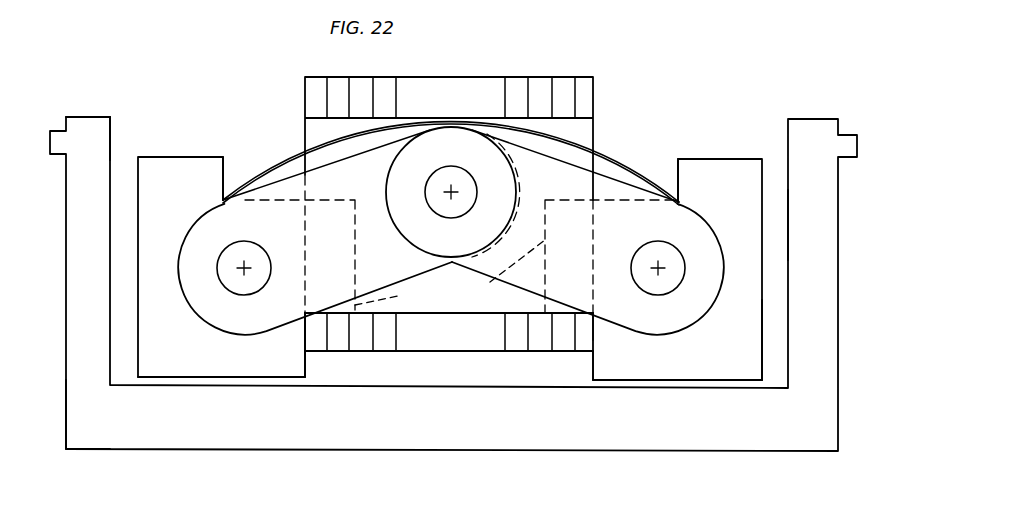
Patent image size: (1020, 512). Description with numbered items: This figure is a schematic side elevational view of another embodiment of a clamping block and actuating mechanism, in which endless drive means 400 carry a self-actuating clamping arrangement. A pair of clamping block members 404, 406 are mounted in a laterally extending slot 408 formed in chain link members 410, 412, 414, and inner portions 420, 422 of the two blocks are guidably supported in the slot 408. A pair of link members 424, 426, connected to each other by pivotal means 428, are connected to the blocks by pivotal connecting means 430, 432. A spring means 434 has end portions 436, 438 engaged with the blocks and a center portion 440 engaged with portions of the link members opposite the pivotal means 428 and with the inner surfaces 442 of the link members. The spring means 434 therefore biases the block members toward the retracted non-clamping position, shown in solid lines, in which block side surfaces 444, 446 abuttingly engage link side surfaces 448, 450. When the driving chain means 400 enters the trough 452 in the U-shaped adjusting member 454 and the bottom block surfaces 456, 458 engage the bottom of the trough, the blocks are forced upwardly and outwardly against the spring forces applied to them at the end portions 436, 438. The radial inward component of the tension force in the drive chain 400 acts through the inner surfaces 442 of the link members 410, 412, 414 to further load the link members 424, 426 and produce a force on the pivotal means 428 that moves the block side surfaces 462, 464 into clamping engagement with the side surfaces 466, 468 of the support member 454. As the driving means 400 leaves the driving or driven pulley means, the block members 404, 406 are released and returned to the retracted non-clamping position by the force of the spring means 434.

The endless drive means 400 is at (606, 80).
The clamping block member 404 is at (195, 368).
The clamping block member 406 is at (732, 372).
The laterally extending slot 408 is at (452, 298).
The chain link member 410 is at (312, 342).
The chain link member 412 is at (362, 342).
The chain link member 414 is at (585, 340).
The inner portion 420 is at (450, 274).
The inner portion 422 is at (505, 107).
The link member 424 is at (203, 290).
The link member 426 is at (692, 310).
The pivotal means 428 is at (447, 207).
The pivotal connecting means 430 is at (240, 285).
The pivotal connecting means 432 is at (650, 283).
The spring means 434 is at (273, 160).
The end portion 436 is at (222, 200).
The end portion 438 is at (677, 200).
The center portion 440 is at (446, 120).
The inner surfaces 442 is at (356, 120).
The block side surface 444 is at (304, 322).
The block side surface 446 is at (587, 327).
The link side surface 448 is at (304, 346).
The link side surface 450 is at (595, 364).
The trough 452 is at (655, 130).
The U-shaped adjusting member 454 is at (90, 126).
The bottom block surface 456 is at (212, 378).
The bottom block surface 458 is at (690, 381).
The block side surface 462 is at (135, 357).
The block side surface 464 is at (762, 332).
The side surface 466 is at (112, 152).
The side surface 468 is at (781, 221).